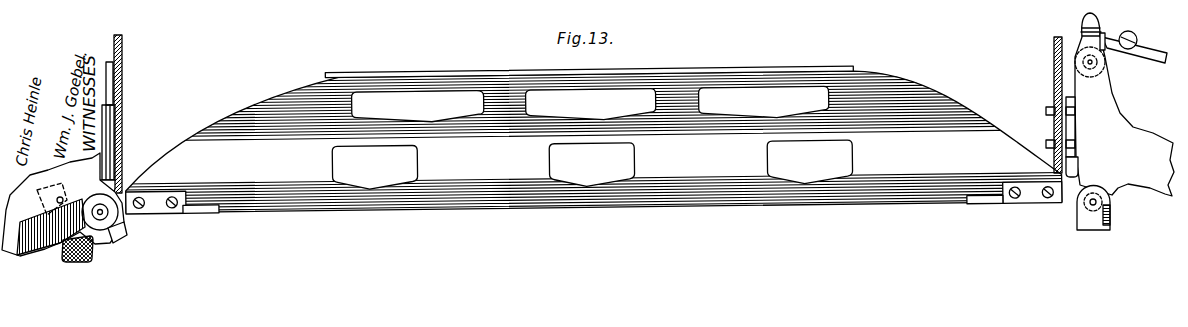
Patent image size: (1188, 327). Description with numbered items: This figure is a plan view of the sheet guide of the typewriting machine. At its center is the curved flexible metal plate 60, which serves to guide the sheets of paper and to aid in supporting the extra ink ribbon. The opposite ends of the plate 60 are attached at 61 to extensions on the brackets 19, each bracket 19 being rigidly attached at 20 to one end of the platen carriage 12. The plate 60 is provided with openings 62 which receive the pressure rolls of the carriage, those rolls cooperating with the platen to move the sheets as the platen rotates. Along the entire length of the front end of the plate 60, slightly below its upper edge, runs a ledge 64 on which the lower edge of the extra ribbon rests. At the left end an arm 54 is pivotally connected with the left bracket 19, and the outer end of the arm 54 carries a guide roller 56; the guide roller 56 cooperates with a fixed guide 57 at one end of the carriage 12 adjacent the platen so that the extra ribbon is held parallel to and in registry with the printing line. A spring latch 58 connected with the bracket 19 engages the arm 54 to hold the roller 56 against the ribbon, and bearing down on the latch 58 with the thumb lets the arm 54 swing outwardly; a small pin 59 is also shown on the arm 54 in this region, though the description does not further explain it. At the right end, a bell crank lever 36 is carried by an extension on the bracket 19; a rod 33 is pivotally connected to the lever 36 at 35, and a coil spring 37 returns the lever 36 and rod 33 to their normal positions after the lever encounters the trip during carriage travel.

The platen carriage 12 is at (123, 97).
The bracket 19 is at (25, 256).
The attachment point 20 is at (1077, 124).
The rod 33 is at (1166, 63).
The pivotal connection 35 is at (1130, 32).
The bell crank lever 36 is at (1083, 30).
The coil spring 37 is at (1104, 48).
The arm 54 is at (57, 249).
The guide roller 56 is at (118, 214).
The fixed guide 57 is at (206, 213).
The spring latch 58 is at (79, 262).
The pin 59 is at (63, 197).
The curved flexible metal plate 60 is at (780, 72).
The plate attachment 61 is at (174, 216).
The openings 62 is at (468, 119).
The ledge 64 is at (494, 207).